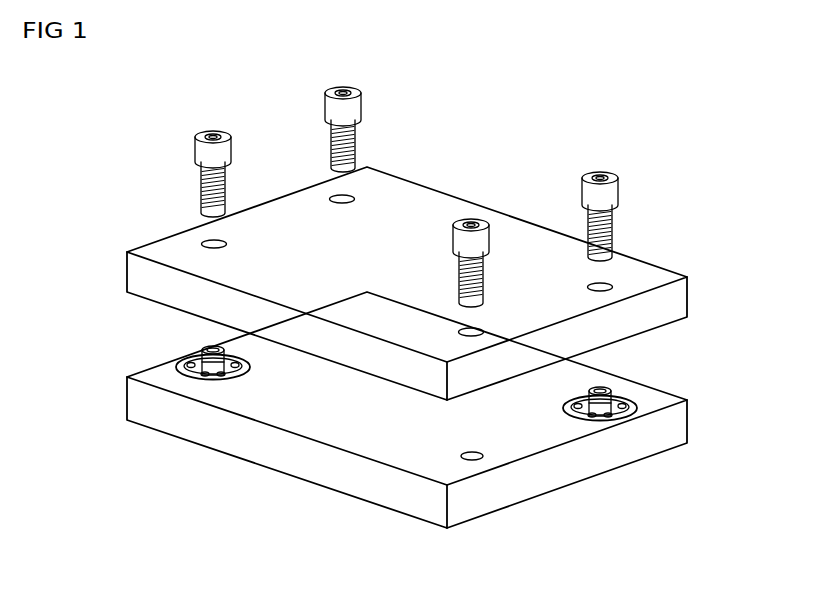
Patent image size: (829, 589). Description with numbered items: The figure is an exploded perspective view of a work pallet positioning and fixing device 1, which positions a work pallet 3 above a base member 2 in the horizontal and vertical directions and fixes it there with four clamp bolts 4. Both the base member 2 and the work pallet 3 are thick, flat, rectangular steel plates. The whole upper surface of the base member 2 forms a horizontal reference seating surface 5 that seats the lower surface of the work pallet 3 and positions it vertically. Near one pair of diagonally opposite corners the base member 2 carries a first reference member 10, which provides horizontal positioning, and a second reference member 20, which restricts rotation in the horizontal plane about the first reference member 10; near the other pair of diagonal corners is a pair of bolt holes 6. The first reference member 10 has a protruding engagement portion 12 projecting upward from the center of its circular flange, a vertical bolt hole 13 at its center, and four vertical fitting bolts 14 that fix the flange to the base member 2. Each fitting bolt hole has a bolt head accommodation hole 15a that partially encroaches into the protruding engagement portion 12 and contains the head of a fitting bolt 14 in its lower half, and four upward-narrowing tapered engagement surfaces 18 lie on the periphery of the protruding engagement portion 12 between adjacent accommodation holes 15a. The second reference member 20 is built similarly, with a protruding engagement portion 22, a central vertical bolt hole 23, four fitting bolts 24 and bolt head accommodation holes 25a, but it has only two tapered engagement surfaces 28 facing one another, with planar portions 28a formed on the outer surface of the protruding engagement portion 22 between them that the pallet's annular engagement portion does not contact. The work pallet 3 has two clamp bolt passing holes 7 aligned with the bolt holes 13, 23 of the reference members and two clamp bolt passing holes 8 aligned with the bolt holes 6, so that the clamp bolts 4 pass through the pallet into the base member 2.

The work pallet positioning and fixing device 1 is at (588, 110).
The base member 2 is at (415, 408).
The work pallet 3 is at (415, 283).
The clamp bolt 4 is at (232, 152).
The reference seating surface 5 is at (325, 430).
The bolt hole 6 is at (481, 452).
The clamp bolt passing hole 7 is at (220, 248).
The clamp bolt passing hole 8 is at (338, 206).
The first reference member 10 is at (217, 378).
The protruding engagement portion 12 is at (228, 352).
The vertical bolt hole 13 is at (213, 348).
The fitting bolt 14 is at (192, 378).
The bolt head accommodation hole 15a is at (254, 370).
The tapered engagement surface 18 is at (238, 361).
The second reference member 20 is at (591, 417).
The protruding engagement portion 22 is at (588, 392).
The vertical bolt hole 23 is at (600, 390).
The fitting bolt 24 is at (575, 420).
The bolt head accommodation hole 25a is at (600, 418).
The tapered engagement surface 28 is at (598, 416).
The planar portion 28a is at (623, 399).